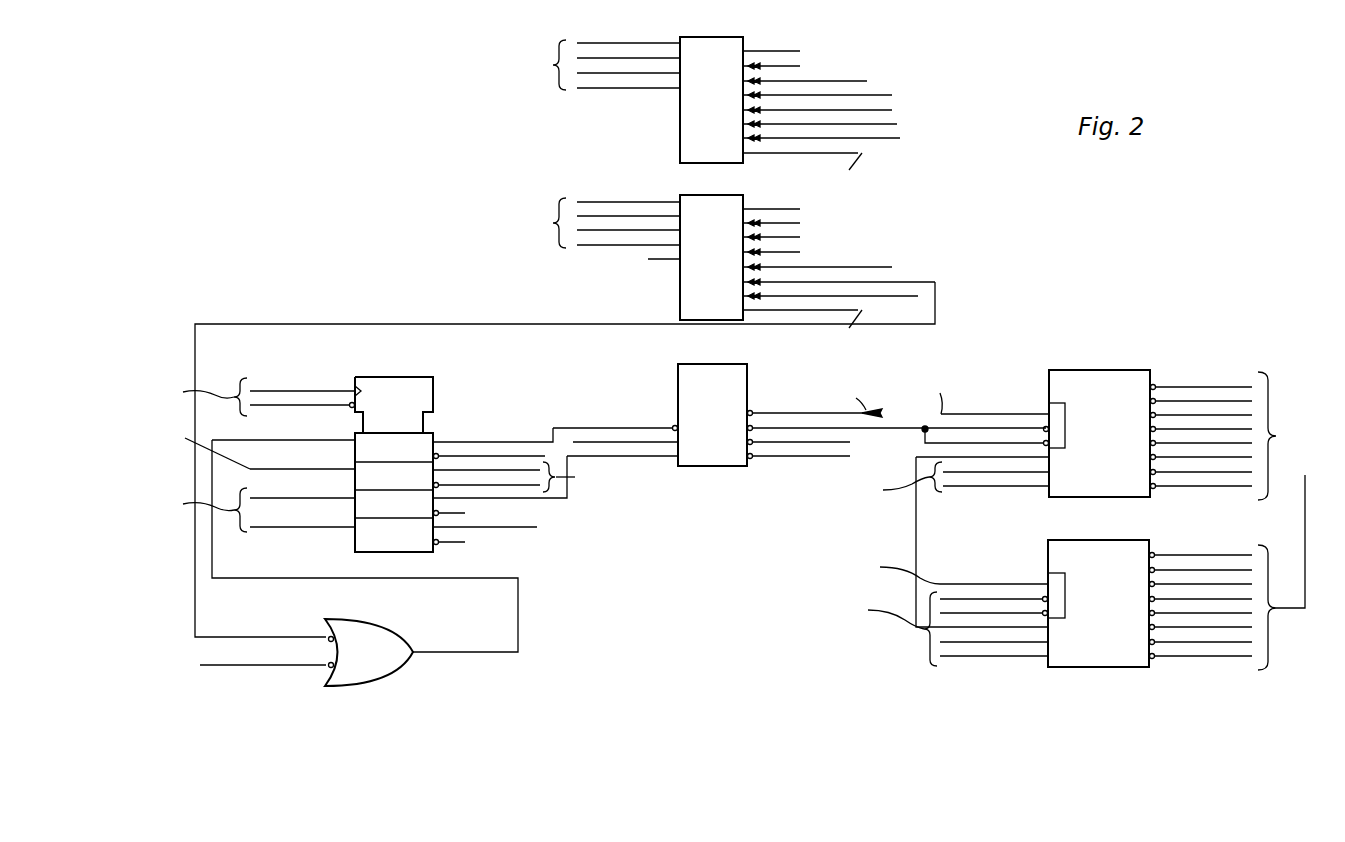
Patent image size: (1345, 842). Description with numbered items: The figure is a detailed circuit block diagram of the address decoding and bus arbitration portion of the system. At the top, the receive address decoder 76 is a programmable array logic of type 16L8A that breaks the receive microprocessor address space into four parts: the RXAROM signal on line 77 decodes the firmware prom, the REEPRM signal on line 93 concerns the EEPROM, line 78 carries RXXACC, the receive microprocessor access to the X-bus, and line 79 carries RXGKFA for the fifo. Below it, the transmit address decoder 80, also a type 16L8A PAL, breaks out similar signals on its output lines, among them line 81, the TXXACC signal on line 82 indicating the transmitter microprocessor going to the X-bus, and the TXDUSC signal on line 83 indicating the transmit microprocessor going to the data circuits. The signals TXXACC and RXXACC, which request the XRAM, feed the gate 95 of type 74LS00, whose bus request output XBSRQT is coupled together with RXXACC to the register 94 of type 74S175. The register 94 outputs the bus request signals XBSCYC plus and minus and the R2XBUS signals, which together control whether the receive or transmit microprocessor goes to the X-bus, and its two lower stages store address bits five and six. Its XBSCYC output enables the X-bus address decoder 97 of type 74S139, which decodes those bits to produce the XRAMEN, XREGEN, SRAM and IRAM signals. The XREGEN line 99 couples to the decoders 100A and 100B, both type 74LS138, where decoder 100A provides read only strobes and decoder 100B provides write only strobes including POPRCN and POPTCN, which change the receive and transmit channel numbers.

The receive address decoder 76 is at (726, 149).
The transmit address decoder 80 is at (726, 307).
The REEPRM signal line 93 is at (892, 95).
The RXGKFA output line 79 is at (892, 110).
The RXXACC output line 78 is at (897, 124).
The RXAROM output line 77 is at (900, 138).
The TXDUSC output line 83 is at (892, 267).
The TXXACC output line 82 is at (935, 305).
The transmit address decoder output line 81 is at (915, 298).
The register 94 is at (360, 543).
The gate 95 is at (371, 630).
The X-bus address decoder 97 is at (705, 460).
The line from decoder 99 is at (868, 432).
The read-only strobe decoder 100A is at (1122, 487).
The write-only strobe decoder 100B is at (1121, 657).